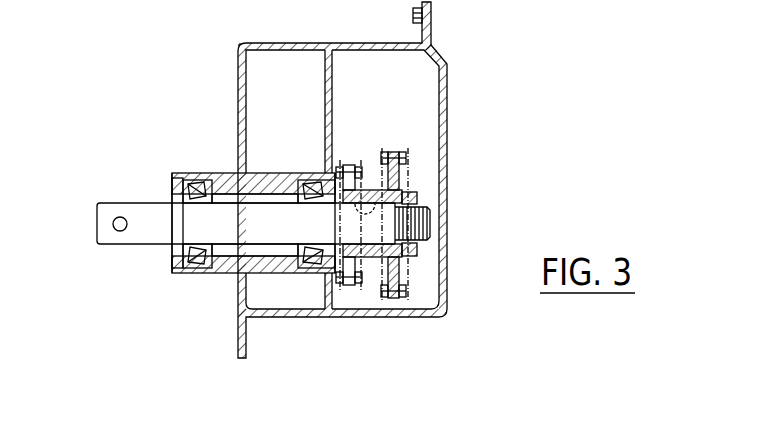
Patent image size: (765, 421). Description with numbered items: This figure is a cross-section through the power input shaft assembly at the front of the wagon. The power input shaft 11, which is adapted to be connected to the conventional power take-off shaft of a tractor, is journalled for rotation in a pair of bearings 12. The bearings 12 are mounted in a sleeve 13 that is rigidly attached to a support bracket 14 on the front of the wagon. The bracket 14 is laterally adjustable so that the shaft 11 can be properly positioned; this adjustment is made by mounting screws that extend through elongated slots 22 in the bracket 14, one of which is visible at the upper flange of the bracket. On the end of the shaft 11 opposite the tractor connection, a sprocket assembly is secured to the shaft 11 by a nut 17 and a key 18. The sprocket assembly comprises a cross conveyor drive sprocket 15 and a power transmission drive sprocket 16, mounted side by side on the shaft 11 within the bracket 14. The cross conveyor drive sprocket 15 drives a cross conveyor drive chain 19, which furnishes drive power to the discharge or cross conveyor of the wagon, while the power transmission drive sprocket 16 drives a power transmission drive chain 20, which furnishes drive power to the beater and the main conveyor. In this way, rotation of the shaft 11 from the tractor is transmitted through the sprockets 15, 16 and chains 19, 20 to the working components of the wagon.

The power input shaft 11 is at (108, 215).
The bearings 12 is at (195, 190).
The sleeve 13 is at (259, 173).
The support bracket 14 is at (237, 85).
The cross conveyor drive sprocket 15 is at (394, 150).
The power transmission drive sprocket 16 is at (350, 165).
The nut 17 is at (417, 198).
The key 18 is at (360, 203).
The cross conveyor drive chain 19 is at (410, 160).
The power transmission drive chain 20 is at (360, 170).
The elongated slots 22 is at (413, 13).